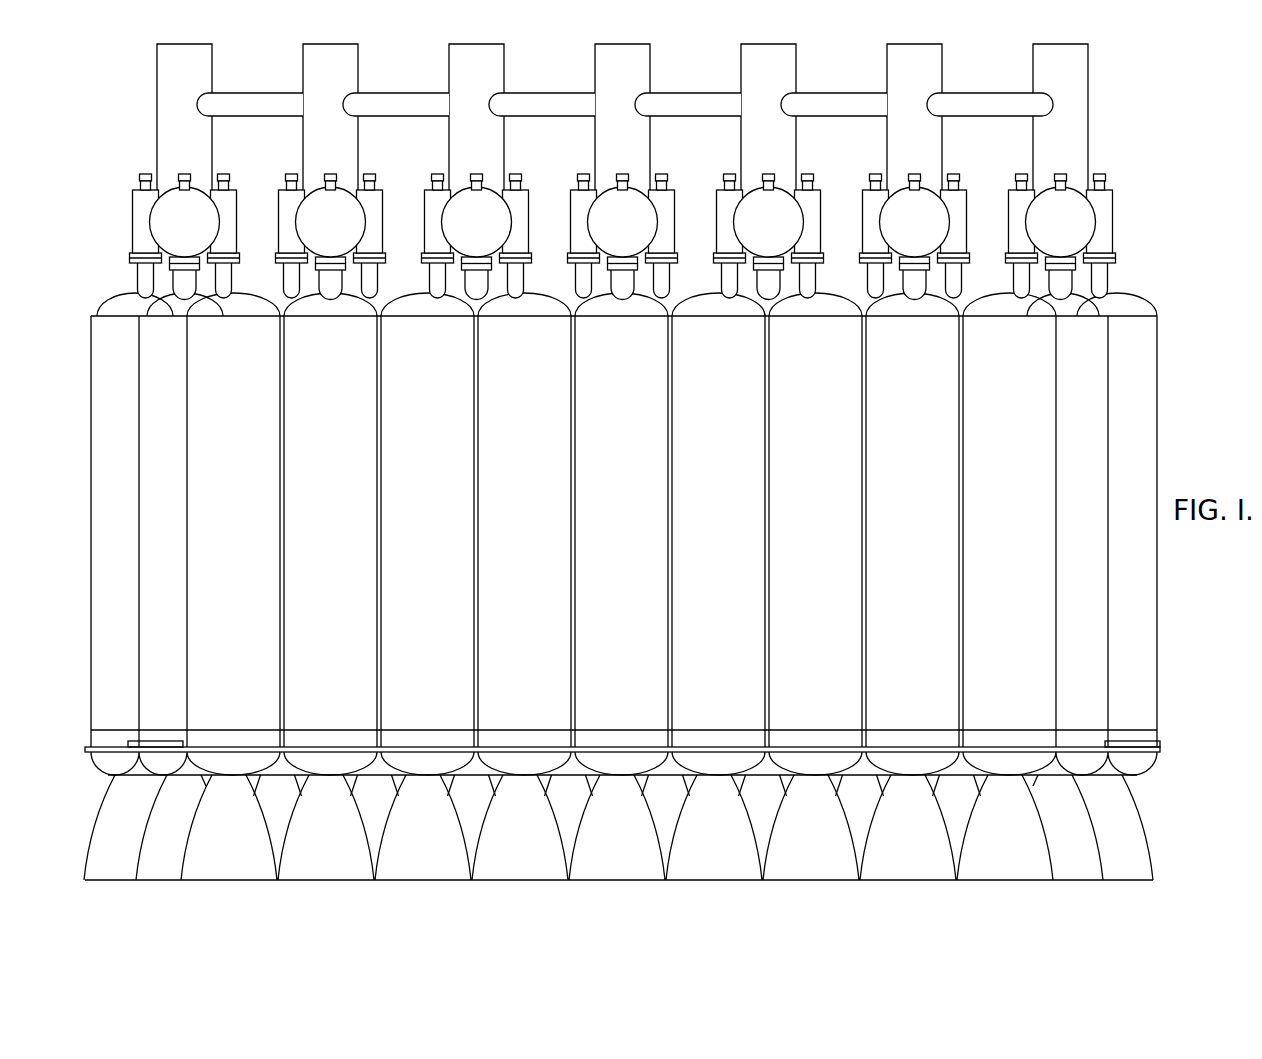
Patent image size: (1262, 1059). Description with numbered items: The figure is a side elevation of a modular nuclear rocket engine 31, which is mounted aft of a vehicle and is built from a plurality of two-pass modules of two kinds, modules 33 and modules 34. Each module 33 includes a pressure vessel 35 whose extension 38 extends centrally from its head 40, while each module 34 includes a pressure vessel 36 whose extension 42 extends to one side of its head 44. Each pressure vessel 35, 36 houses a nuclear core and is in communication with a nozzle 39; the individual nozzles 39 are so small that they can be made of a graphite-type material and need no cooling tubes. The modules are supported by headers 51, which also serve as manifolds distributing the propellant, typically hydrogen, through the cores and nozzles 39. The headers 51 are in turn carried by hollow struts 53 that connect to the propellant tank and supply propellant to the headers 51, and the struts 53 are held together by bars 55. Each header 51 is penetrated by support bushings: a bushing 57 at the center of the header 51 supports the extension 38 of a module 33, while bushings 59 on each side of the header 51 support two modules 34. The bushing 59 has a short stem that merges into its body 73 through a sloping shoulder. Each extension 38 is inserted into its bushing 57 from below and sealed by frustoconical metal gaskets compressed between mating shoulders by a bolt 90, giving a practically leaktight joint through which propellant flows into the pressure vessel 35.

The modular nuclear rocket engine 31 is at (80, 429).
The module 33 is at (148, 487).
The module 34 is at (98, 466).
The pressure vessel 35 is at (146, 381).
The pressure vessel 36 is at (97, 350).
The extension 38 is at (190, 282).
The nozzle 39 is at (117, 801).
The head 40 is at (173, 305).
The extension 42 is at (150, 268).
The head 44 is at (118, 314).
The header 51 is at (478, 195).
The hollow strut 53 is at (165, 75).
The bar 55 is at (277, 101).
The support bushing 57 is at (188, 293).
The support bushing 59 is at (142, 212).
The body 73 is at (1013, 212).
The bolt 90 is at (338, 158).